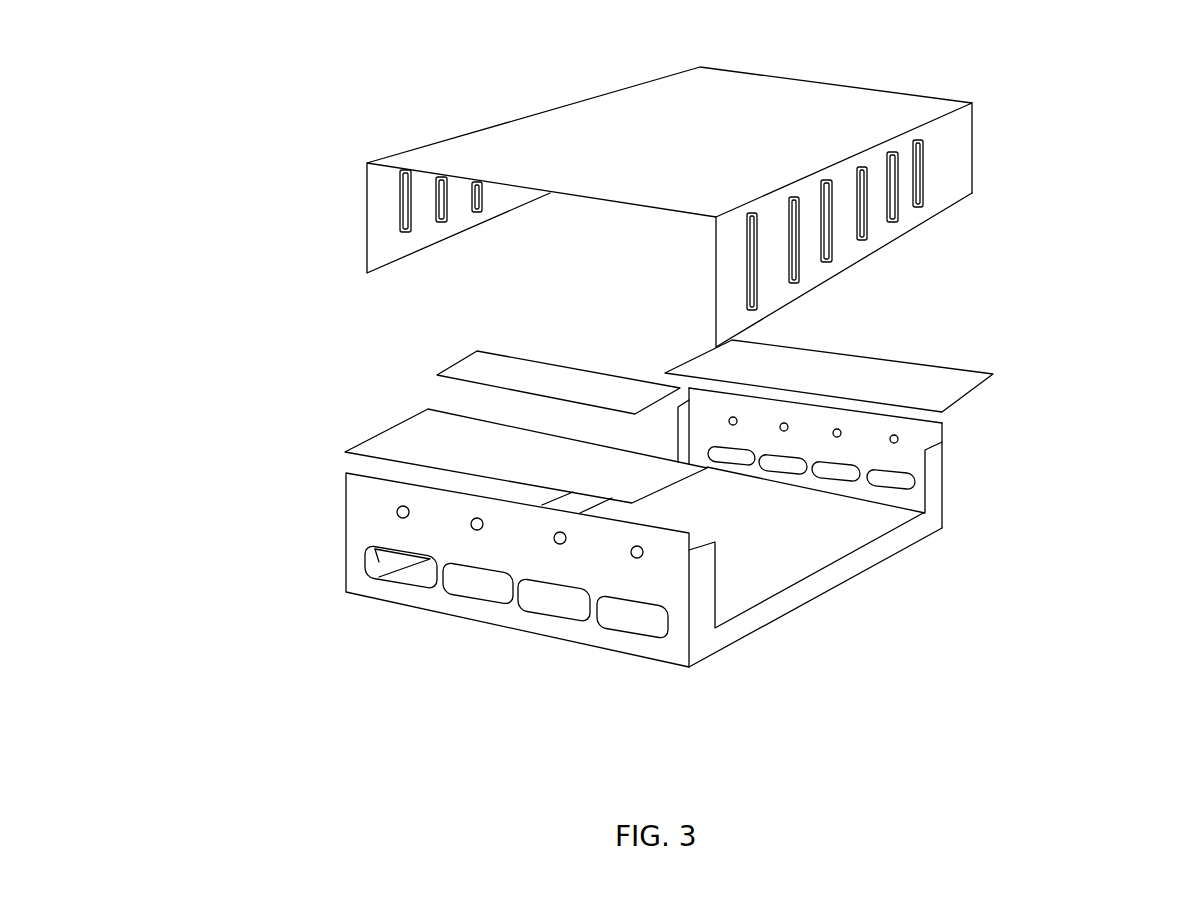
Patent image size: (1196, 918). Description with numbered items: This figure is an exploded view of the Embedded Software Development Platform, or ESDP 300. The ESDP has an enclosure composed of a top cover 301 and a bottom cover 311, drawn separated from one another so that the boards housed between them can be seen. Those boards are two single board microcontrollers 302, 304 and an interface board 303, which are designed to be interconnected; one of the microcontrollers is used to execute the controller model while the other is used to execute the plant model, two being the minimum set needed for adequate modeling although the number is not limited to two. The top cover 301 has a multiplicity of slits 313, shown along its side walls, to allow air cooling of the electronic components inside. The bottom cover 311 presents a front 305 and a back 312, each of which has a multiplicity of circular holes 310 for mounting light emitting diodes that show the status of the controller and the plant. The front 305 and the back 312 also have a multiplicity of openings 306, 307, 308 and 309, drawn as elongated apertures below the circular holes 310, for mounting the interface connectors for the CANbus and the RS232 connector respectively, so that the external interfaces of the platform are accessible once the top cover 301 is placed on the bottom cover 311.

The ESDP 300 is at (368, 117).
The top cover 301 is at (598, 96).
The single board microcontroller 302 is at (378, 435).
The interface board 303 is at (447, 368).
The single board microcontroller 304 is at (964, 373).
The front 305 is at (345, 527).
The opening 306 is at (408, 585).
The opening 307 is at (468, 600).
The opening 308 is at (543, 618).
The opening 309 is at (618, 632).
The circular holes 310 is at (641, 553).
The bottom cover 311 is at (820, 596).
The back 312 is at (943, 422).
The slits 313 is at (922, 170).